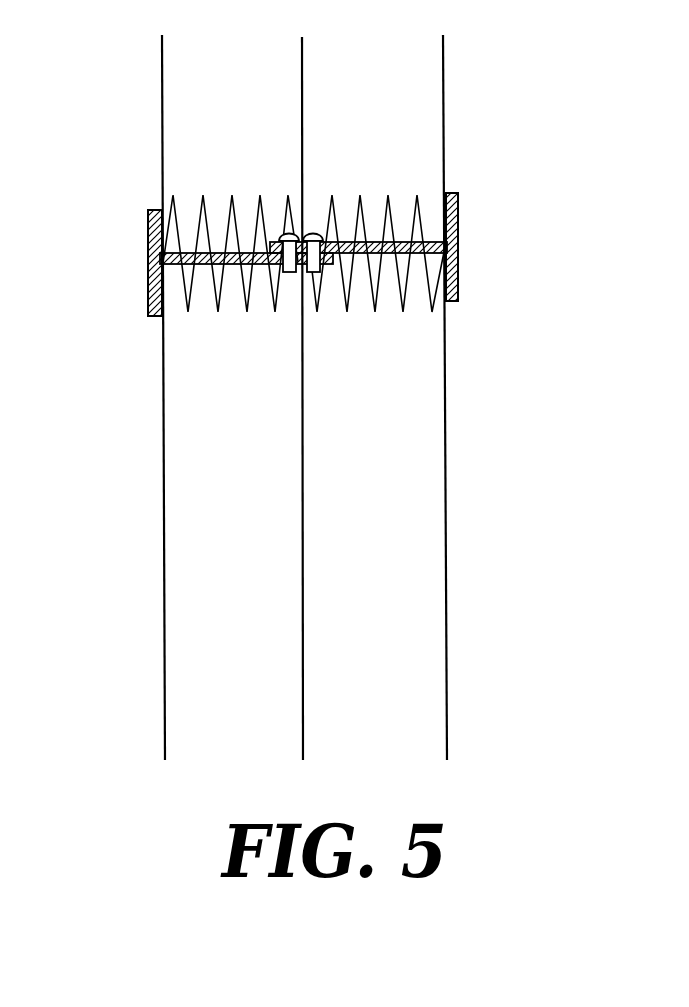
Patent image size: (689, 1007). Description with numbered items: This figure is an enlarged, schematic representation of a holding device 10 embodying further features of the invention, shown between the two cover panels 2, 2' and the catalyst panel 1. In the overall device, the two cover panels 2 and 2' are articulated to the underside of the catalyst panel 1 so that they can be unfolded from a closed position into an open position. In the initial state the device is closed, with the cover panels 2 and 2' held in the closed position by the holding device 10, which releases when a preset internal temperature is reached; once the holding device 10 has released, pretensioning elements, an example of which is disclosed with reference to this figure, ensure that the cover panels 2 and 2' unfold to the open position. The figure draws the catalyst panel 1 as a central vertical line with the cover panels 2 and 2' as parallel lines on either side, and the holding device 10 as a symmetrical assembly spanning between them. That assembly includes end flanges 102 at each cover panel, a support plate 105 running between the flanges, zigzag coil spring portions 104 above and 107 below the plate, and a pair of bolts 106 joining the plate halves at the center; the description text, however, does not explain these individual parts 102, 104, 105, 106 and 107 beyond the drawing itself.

The catalyst panel 1 is at (302, 37).
The cover panel 2 is at (134, 381).
The cover panel 2' is at (467, 382).
The holding device 10 is at (470, 222).
The end flange 102 is at (150, 211).
The coil spring 104 is at (265, 243).
The support plate 105 is at (148, 257).
The bolts 106 is at (290, 272).
The coil spring lower portion 107 is at (245, 313).